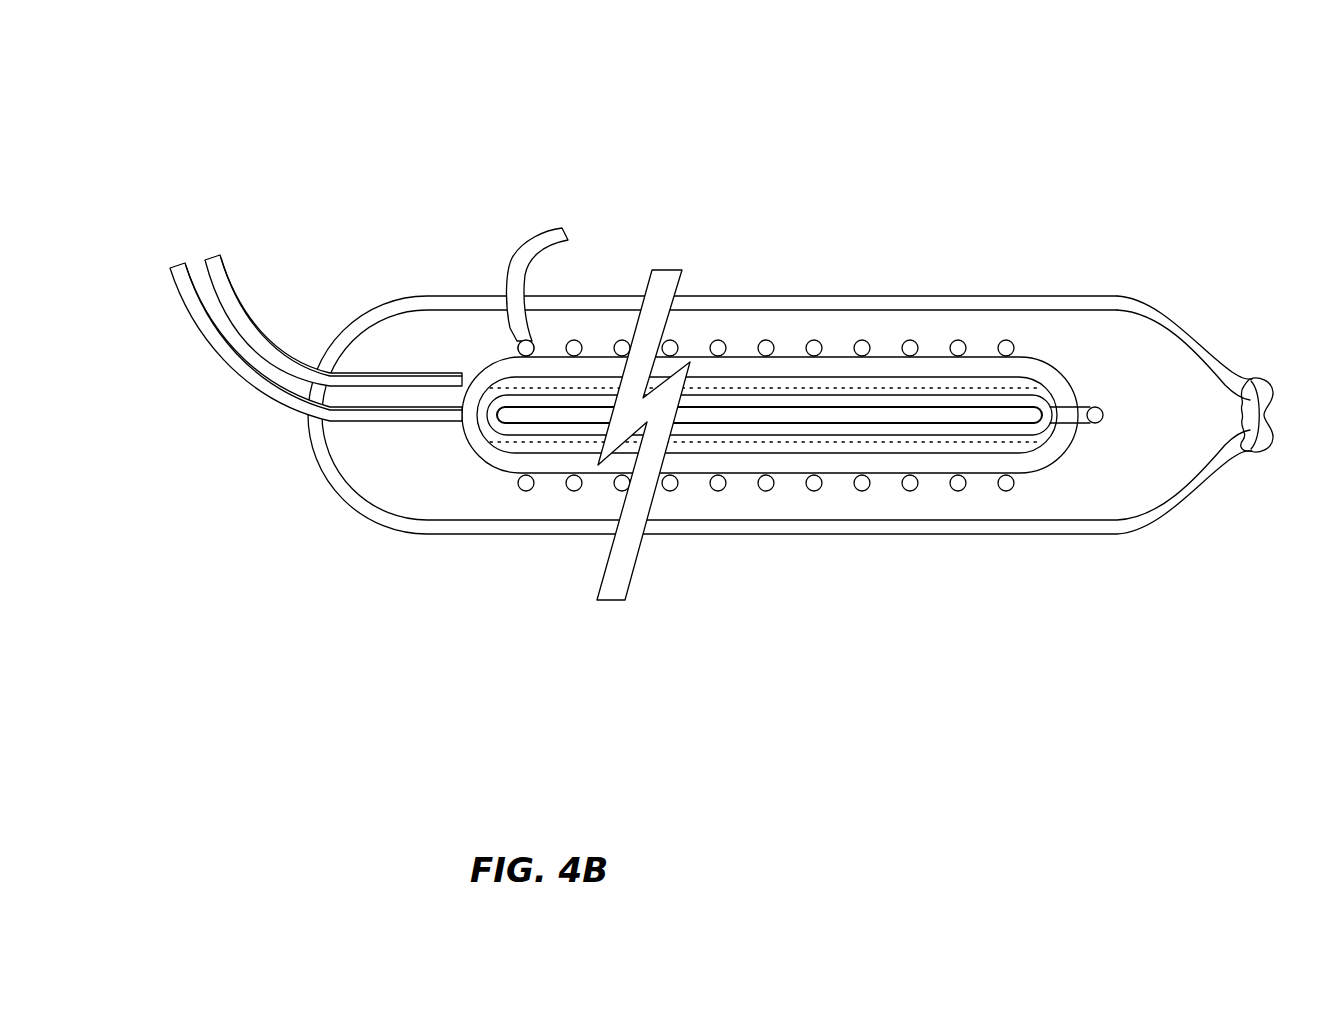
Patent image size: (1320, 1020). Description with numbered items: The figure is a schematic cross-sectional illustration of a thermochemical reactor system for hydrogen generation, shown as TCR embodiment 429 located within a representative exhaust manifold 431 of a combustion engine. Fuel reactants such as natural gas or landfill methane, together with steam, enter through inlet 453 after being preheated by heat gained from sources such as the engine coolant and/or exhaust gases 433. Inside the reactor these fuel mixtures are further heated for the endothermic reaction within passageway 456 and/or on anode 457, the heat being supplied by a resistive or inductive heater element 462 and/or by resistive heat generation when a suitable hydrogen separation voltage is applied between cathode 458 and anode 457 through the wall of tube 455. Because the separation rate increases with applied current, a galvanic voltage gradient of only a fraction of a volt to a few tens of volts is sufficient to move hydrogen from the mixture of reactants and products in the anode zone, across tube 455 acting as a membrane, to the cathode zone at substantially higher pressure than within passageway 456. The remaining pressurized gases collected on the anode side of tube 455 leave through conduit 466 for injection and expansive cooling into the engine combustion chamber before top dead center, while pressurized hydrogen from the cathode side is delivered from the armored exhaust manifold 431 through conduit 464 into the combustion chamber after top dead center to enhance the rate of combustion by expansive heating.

The TCR embodiment 429 is at (708, 343).
The exhaust manifold 431 is at (539, 527).
The exhaust gases 433 is at (402, 498).
The inlet 453 is at (523, 242).
The tube 455 is at (1011, 390).
The passageway 456 is at (970, 416).
The anode 457 is at (866, 420).
The cathode 458 is at (1097, 406).
The resistive or inductive heater element 462 is at (967, 390).
The conduit 464 is at (228, 283).
The conduit 466 is at (192, 277).